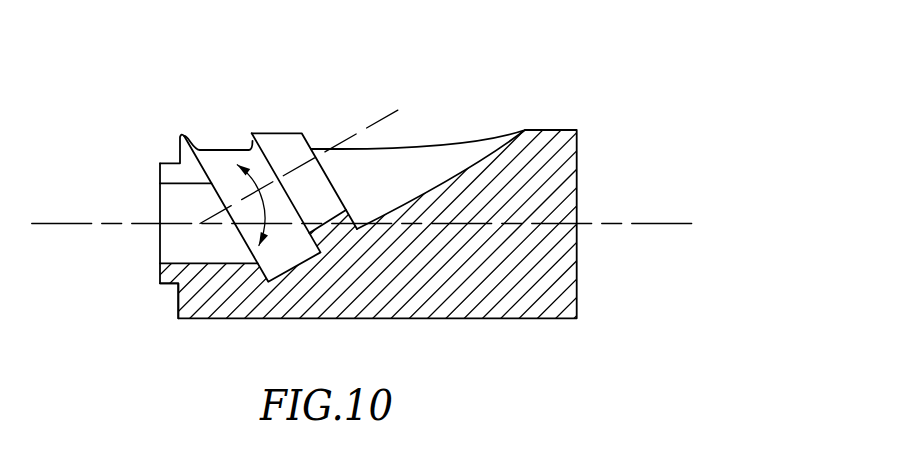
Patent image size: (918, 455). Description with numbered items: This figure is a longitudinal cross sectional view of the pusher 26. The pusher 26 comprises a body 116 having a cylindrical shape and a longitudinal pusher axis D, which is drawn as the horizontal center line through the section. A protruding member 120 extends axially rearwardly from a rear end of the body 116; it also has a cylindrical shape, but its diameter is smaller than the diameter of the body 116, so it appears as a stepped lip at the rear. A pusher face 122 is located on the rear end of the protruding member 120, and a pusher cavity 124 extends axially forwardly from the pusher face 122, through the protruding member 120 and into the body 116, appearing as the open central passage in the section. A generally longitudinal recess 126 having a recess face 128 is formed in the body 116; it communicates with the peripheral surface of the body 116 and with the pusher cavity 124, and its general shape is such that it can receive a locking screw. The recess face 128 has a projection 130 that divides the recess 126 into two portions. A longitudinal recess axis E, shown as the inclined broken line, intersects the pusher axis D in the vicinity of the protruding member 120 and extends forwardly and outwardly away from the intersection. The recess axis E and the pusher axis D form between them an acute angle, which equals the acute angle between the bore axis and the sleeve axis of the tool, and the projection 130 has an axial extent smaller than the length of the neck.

The pusher 26 is at (578, 61).
The body 116 is at (277, 283).
The protruding member 120 is at (164, 153).
The pusher face 122 is at (160, 268).
The pusher cavity 124 is at (197, 237).
The recess 126 is at (312, 136).
The recess face 128 is at (455, 174).
The projection 130 is at (336, 237).
The pusher axis D is at (640, 222).
The recess axis E is at (382, 108).